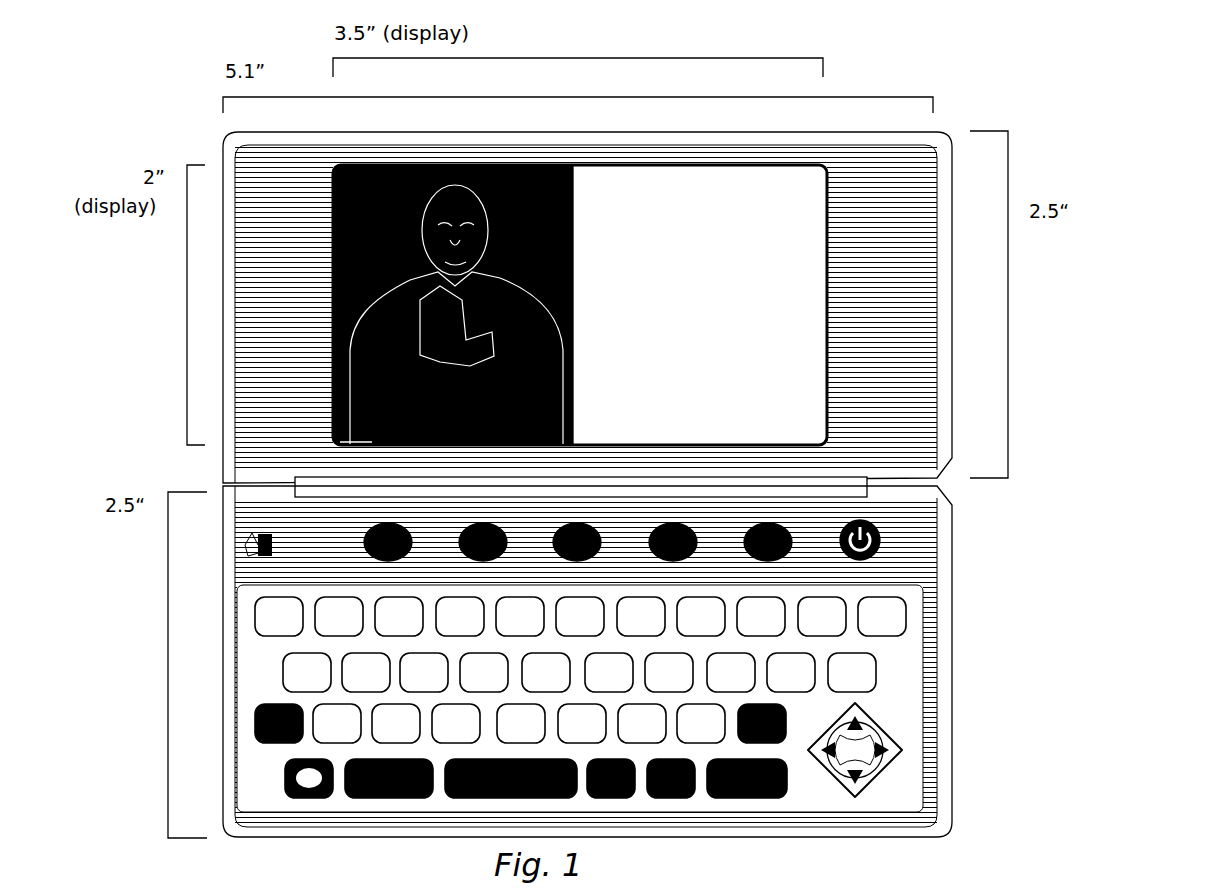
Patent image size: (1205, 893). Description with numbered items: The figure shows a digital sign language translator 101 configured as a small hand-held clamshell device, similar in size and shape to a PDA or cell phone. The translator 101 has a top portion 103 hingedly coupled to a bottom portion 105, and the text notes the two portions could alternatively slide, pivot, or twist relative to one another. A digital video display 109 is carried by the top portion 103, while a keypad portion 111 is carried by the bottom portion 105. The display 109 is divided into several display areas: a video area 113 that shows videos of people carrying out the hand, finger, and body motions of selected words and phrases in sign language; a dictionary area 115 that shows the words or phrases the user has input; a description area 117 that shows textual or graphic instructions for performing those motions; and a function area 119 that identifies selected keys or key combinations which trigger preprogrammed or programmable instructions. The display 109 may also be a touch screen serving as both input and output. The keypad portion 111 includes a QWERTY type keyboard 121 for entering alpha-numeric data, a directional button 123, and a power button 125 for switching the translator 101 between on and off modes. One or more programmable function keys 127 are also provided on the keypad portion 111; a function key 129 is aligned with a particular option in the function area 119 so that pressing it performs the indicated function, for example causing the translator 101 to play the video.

The digital sign language translator 101 is at (1040, 131).
The top portion 103 is at (953, 408).
The bottom portion 105 is at (953, 720).
The digital video display 109 is at (828, 267).
The keypad portion 111 is at (890, 697).
The video area 113 is at (517, 197).
The dictionary area 115 is at (692, 194).
The description area 117 is at (774, 215).
The function area 119 is at (391, 456).
The QWERTY type keyboard 121 is at (262, 655).
The directional button 123 is at (882, 773).
The power button 125 is at (884, 532).
The programmable function keys 127 is at (473, 525).
The function key 129 is at (363, 529).